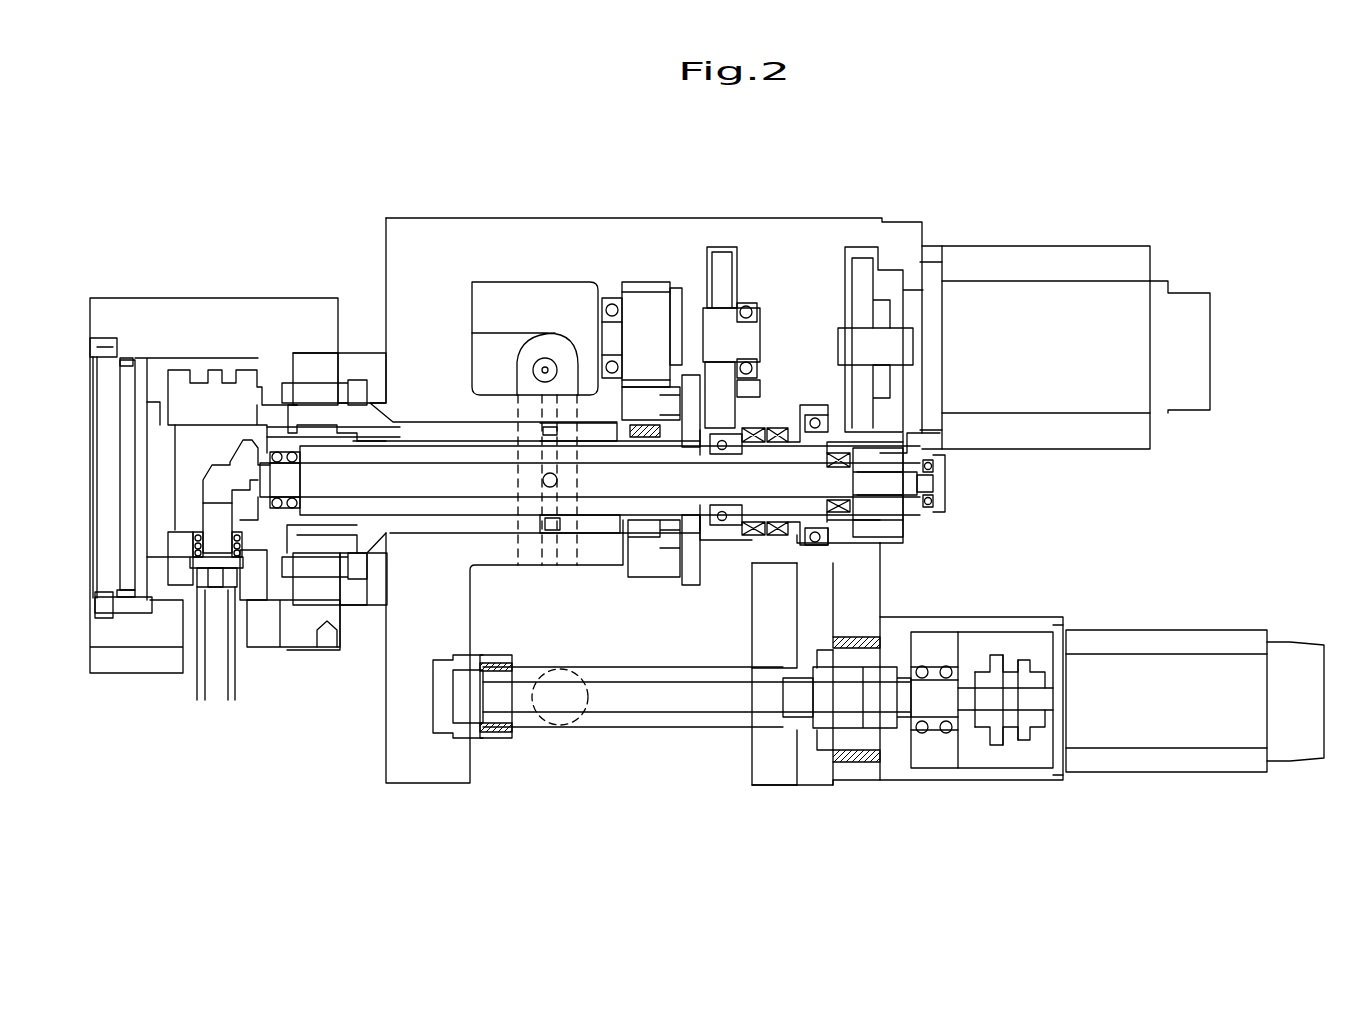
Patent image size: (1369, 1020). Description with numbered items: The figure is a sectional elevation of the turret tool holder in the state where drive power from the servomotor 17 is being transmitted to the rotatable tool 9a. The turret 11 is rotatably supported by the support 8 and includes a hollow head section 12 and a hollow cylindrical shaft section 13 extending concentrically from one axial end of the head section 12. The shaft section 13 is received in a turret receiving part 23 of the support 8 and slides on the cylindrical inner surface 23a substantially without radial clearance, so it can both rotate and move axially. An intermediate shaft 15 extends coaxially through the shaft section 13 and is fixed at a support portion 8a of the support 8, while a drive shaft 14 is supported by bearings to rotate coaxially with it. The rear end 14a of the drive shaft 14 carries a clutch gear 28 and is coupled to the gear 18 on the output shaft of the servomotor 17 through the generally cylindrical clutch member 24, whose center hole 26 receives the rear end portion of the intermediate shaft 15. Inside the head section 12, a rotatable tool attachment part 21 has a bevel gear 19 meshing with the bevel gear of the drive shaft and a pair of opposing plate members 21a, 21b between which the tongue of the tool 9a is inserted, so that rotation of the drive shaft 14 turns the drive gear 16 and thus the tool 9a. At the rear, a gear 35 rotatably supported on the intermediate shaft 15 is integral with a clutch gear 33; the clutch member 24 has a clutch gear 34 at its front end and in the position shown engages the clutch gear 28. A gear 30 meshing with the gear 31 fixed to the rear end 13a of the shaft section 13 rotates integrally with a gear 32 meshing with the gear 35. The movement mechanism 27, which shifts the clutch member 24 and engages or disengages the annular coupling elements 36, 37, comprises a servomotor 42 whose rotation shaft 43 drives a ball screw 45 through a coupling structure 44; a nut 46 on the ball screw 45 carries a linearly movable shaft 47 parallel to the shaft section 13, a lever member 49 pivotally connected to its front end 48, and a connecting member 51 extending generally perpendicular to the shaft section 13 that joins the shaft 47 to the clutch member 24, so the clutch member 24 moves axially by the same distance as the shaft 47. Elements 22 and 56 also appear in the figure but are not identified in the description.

The support 8 is at (433, 762).
The support portion 8a is at (648, 562).
The rotatable tool 9a is at (215, 700).
The turret 11 is at (176, 250).
The head section 12 is at (143, 325).
The shaft section 13 is at (445, 530).
The rear end of shaft section 13a is at (612, 520).
The drive shaft 14 is at (410, 480).
The rear end of drive shaft 14a is at (945, 483).
The intermediate shaft 15 is at (455, 452).
The drive gear 16 is at (242, 440).
The servomotor 17 is at (1068, 315).
The gear 18 is at (860, 278).
The bevel gear 19 is at (245, 555).
The rotatable tool attachment part 21 is at (228, 540).
The plate member 21a is at (215, 595).
The plate member 21b is at (200, 600).
The bearing 22 is at (190, 560).
The turret receiving part 23 is at (428, 428).
The cylindrical inner surface 23a is at (520, 535).
The clutch member 24 is at (855, 525).
The center hole 26 is at (700, 500).
The movement mechanism 27 is at (773, 800).
The clutch gear 28 is at (880, 505).
The gear 30 is at (645, 315).
The gear 31 is at (650, 560).
The gear 32 is at (722, 262).
The clutch gear 33 is at (753, 428).
The clutch gear 34 is at (777, 428).
The gear 35 is at (720, 540).
The annular coupling element 36 is at (364, 370).
The annular coupling element 37 is at (304, 350).
The servomotor 42 is at (1222, 722).
The rotation shaft 43 is at (1038, 700).
The coupling structure 44 is at (990, 720).
The ball screw 45 is at (905, 705).
The nut 46 is at (847, 718).
The linearly movable shaft 47 is at (820, 745).
The front end of linearly movable shaft 48 is at (497, 525).
The lever member 49 is at (567, 623).
The connecting member 51 is at (765, 605).
The eccentric pin 56 is at (540, 368).